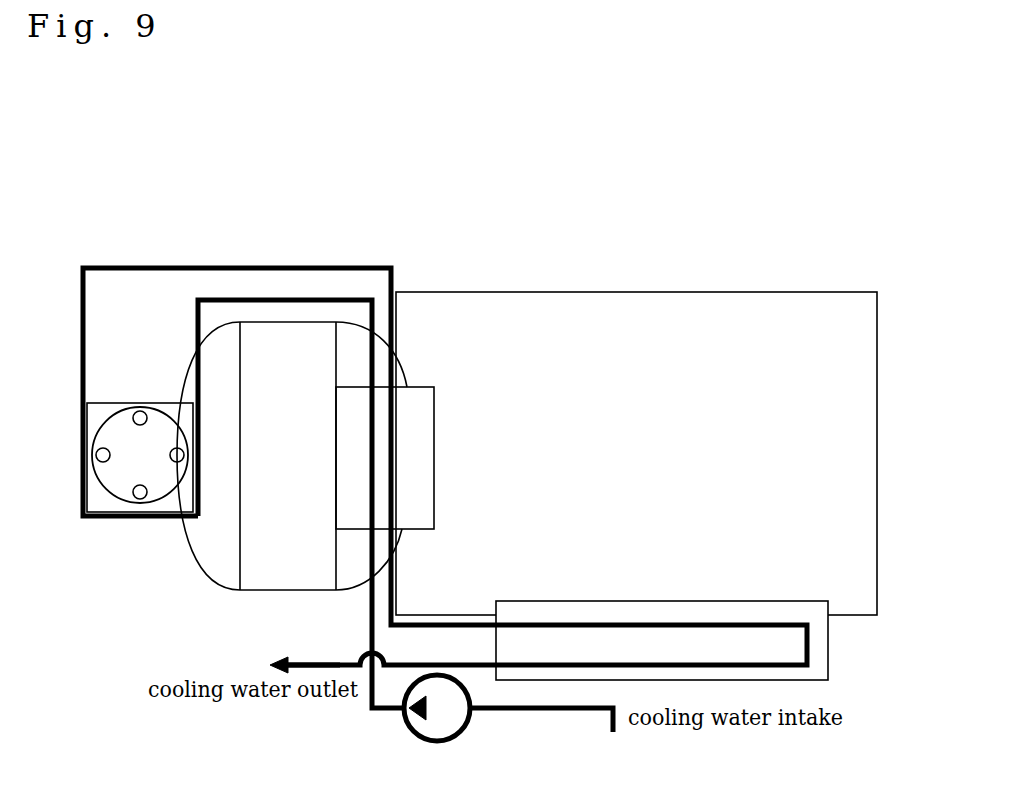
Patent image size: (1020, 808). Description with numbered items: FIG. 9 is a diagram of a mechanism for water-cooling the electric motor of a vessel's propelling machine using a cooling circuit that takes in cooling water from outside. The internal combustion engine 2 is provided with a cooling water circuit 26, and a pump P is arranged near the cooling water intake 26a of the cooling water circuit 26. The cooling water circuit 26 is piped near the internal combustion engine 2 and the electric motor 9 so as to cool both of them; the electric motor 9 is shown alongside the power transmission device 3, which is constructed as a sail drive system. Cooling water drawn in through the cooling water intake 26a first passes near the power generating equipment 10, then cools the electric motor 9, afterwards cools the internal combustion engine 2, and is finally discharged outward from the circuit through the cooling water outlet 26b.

The internal combustion engine 2 is at (636, 463).
The power transmission device 3 is at (100, 404).
The electric motor 9 is at (167, 394).
The power generating equipment 10 is at (263, 584).
The cooling water circuit 26 is at (291, 268).
The cooling water intake 26a is at (612, 720).
The cooling water outlet 26b is at (300, 660).
The pump P is at (420, 724).